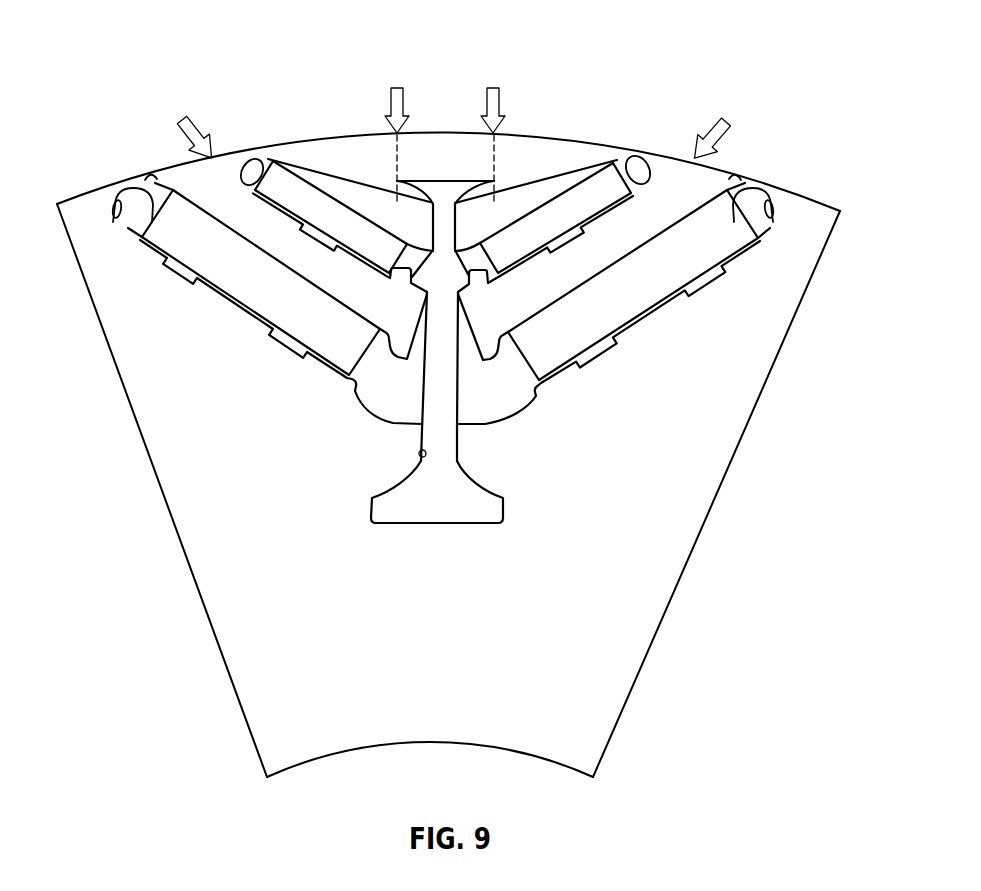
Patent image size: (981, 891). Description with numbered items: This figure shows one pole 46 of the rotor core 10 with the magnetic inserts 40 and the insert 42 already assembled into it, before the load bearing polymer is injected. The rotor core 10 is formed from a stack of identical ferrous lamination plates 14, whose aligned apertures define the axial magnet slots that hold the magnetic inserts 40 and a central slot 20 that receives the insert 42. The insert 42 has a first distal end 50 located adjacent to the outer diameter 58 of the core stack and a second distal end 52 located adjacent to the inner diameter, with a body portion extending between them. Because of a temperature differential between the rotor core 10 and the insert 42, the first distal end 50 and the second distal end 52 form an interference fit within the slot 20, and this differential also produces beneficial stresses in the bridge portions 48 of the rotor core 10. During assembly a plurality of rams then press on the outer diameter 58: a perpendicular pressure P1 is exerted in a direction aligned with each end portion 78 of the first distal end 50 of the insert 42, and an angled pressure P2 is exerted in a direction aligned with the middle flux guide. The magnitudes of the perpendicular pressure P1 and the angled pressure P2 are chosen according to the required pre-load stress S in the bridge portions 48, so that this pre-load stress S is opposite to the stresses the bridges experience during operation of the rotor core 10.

The rotor core 10 is at (624, 645).
The lamination plate 14 is at (708, 479).
The slot 20 is at (419, 455).
The magnetic insert 40 is at (297, 172).
The insert 42 is at (442, 432).
The pole 46 is at (435, 658).
The bridge portion 48 is at (132, 190).
The first distal end 50 is at (431, 188).
The second distal end 52 is at (439, 514).
The outer diameter 58 is at (838, 210).
The end portion 78 is at (397, 181).
The pre-load stress S is at (253, 176).
The perpendicular pressure P1 is at (396, 87).
The angled pressure P2 is at (184, 120).